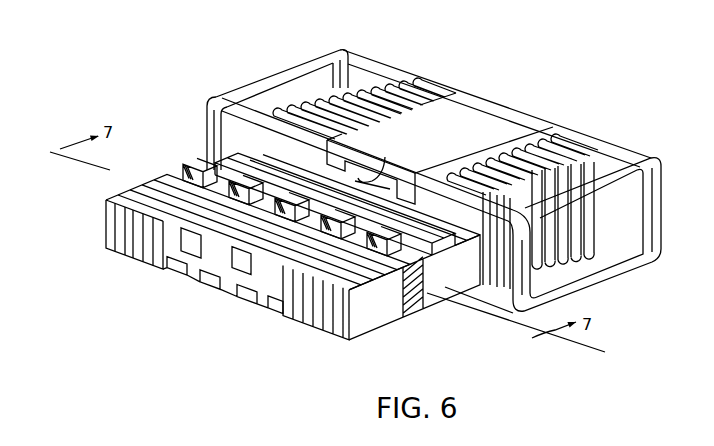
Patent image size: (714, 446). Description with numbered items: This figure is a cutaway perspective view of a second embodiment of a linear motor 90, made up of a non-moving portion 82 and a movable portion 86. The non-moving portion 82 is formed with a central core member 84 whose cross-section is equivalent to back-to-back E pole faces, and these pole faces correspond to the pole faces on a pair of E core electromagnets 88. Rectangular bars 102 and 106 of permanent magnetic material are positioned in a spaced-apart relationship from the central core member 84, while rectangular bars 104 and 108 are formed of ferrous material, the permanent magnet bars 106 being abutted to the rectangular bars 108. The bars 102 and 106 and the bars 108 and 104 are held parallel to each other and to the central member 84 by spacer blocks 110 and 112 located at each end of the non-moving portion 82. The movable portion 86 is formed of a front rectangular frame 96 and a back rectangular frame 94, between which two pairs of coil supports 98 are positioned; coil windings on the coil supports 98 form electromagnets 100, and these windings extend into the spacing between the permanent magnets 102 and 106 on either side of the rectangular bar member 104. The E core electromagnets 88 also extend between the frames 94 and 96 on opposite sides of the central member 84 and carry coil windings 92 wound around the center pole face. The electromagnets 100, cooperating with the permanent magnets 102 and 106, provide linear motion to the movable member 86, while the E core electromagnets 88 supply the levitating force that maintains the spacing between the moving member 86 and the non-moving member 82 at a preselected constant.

The non-moving portion 82 is at (194, 323).
The central core member 84 is at (230, 288).
The movable portion 86 is at (552, 127).
The E core electromagnets 88 is at (507, 107).
The linear motor 90 is at (200, 58).
The coil windings 92 is at (385, 157).
The back rectangular frame 94 is at (340, 58).
The front rectangular frame 96 is at (205, 105).
The coil supports 98 is at (395, 78).
The electromagnets 100 is at (425, 103).
The rectangular bar of permanent magnetic material 102 is at (157, 263).
The rectangular bar of ferrous material 104 is at (138, 262).
The rectangular bar of permanent magnetic material 106 is at (117, 254).
The rectangular bar of ferrous material 108 is at (100, 204).
The spacer block 110 is at (147, 198).
The spacer block 112 is at (147, 262).